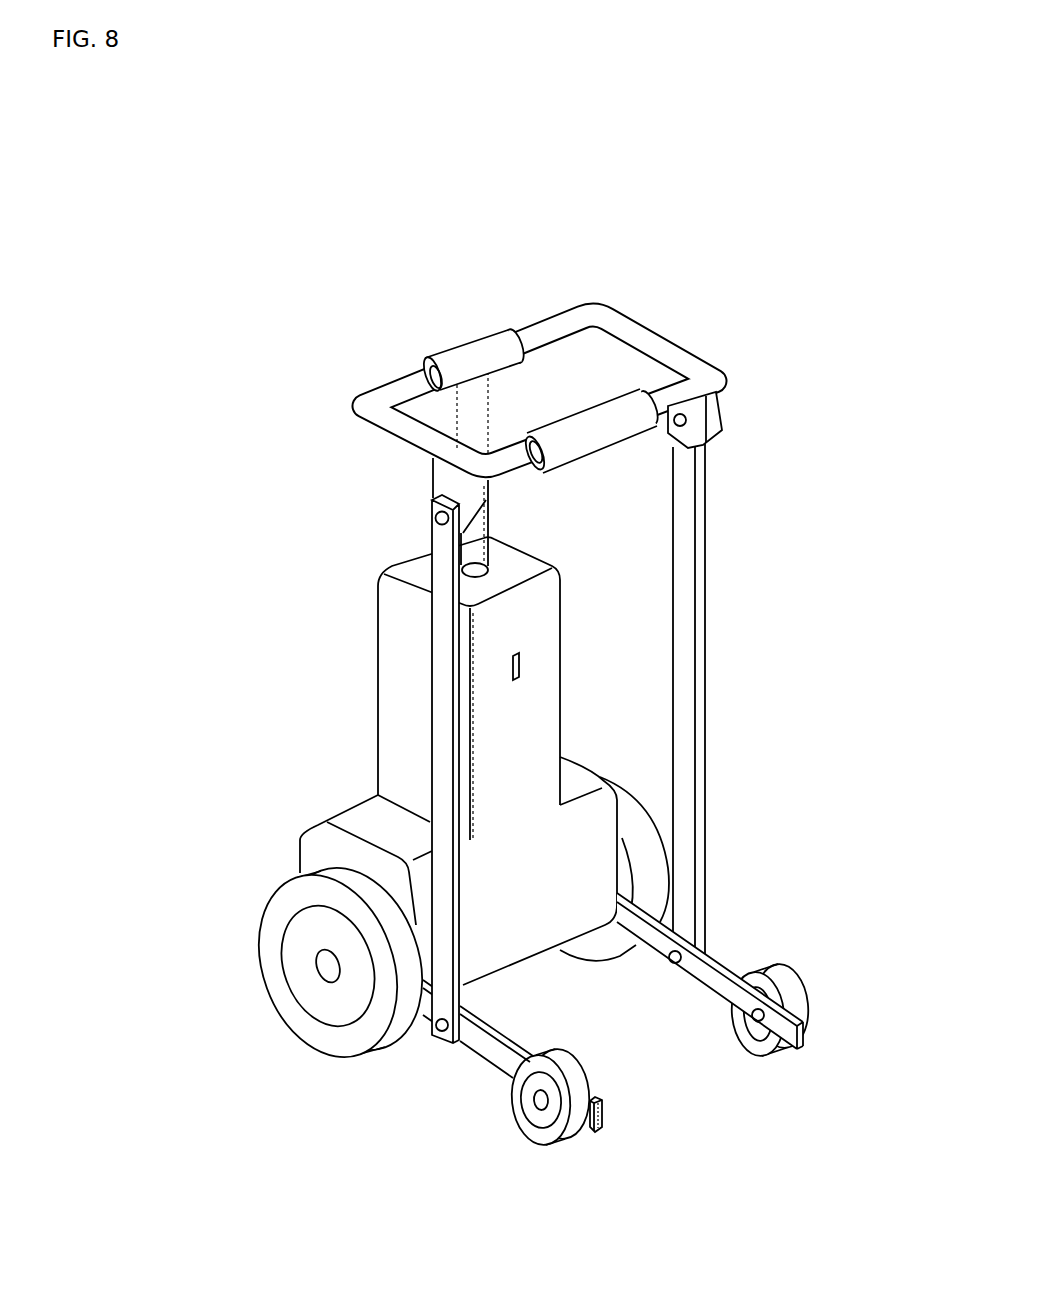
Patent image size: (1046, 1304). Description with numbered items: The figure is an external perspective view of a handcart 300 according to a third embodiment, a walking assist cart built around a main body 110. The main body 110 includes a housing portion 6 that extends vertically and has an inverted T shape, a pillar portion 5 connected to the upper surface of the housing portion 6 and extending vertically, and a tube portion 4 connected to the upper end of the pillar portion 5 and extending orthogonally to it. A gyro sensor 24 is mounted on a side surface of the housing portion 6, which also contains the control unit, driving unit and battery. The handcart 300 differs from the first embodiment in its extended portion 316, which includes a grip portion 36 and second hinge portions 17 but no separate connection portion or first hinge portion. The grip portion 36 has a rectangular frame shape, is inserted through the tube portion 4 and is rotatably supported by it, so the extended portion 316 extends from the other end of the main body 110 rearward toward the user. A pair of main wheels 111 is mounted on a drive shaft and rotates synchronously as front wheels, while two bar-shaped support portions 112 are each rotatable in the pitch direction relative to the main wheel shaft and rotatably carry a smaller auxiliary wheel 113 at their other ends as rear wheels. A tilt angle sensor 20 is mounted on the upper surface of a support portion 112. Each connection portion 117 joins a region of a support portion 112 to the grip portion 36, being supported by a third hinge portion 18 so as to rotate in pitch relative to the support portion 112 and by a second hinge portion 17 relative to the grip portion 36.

The handcart 300 is at (310, 304).
The extended portion 316 is at (504, 383).
The grip portion 36 is at (583, 320).
The second hinge portion 17 is at (681, 414).
The main body 110 is at (265, 586).
The tube portion 4 is at (468, 368).
The pillar portion 5 is at (470, 563).
The housing portion 6 is at (395, 697).
The gyro sensor 24 is at (521, 662).
The connection portion 117 is at (686, 600).
The main wheel 111 is at (633, 822).
The support portion 112 is at (720, 970).
The auxiliary wheel 113 is at (798, 990).
The third hinge portion 18 is at (672, 962).
The tilt angle sensor 20 is at (599, 1099).